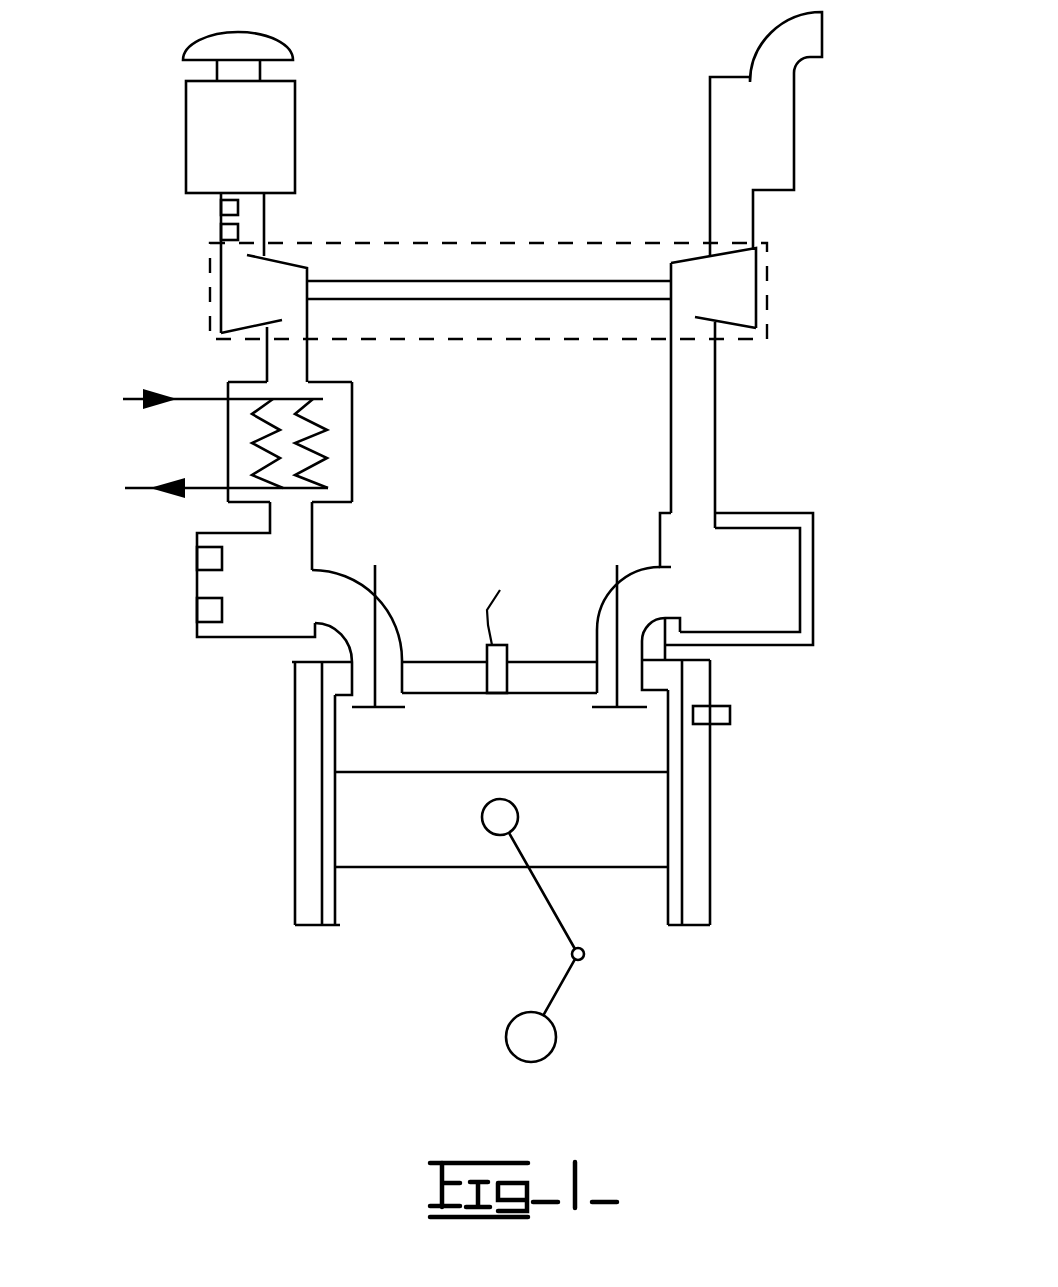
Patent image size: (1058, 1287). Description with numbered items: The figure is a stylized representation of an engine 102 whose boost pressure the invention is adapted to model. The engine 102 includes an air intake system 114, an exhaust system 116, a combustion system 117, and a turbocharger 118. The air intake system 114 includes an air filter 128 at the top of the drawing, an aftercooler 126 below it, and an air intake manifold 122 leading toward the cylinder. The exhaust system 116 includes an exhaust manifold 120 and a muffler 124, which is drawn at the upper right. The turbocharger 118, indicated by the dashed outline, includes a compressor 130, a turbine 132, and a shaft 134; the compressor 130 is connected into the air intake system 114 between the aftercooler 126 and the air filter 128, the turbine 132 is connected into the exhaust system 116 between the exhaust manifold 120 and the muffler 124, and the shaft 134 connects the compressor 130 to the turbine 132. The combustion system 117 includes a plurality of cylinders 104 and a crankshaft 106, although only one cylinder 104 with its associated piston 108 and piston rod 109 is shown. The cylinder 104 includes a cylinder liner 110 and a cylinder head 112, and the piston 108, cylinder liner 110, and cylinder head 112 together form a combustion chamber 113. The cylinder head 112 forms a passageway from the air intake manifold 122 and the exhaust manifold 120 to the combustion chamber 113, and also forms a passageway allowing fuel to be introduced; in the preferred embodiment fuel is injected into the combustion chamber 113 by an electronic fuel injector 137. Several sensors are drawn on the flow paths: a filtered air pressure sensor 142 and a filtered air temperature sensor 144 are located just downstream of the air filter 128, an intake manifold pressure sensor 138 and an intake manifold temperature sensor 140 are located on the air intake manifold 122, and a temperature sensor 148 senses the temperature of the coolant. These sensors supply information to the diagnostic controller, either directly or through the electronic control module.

The engine 102 is at (560, 140).
The cylinder 104 is at (745, 857).
The crankshaft 106 is at (586, 1013).
The piston 108 is at (630, 820).
The piston rod 109 is at (514, 906).
The cylinder liner 110 is at (338, 927).
The cylinder head 112 is at (292, 655).
The combustion chamber 113 is at (501, 793).
The air intake system 114 is at (103, 455).
The exhaust system 116 is at (712, 50).
The combustion system 117 is at (390, 760).
The turbocharger 118 is at (510, 210).
The exhaust manifold 120 is at (787, 648).
The air intake manifold 122 is at (252, 638).
The muffler 124 is at (832, 152).
The aftercooler 126 is at (352, 440).
The air filter 128 is at (186, 138).
The compressor 130 is at (221, 290).
The turbine 132 is at (768, 280).
The shaft 134 is at (495, 281).
The electronic fuel injector 137 is at (525, 652).
The intake manifold pressure sensor 138 is at (197, 563).
The intake manifold temperature sensor 140 is at (197, 612).
The filtered air pressure sensor 142 is at (221, 207).
The filtered air temperature sensor 144 is at (221, 231).
The temperature sensor 148 is at (730, 712).